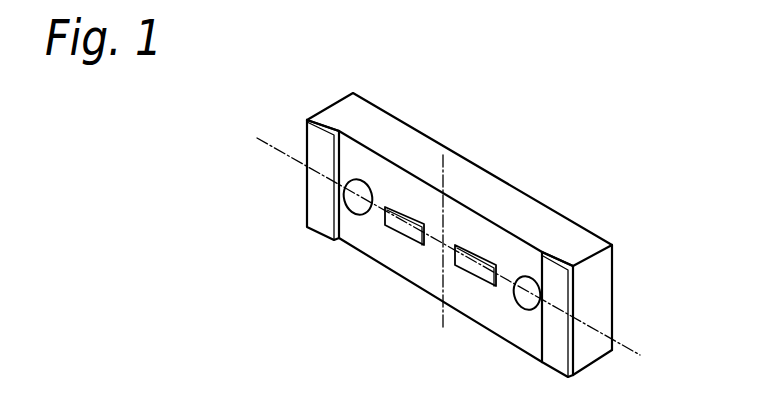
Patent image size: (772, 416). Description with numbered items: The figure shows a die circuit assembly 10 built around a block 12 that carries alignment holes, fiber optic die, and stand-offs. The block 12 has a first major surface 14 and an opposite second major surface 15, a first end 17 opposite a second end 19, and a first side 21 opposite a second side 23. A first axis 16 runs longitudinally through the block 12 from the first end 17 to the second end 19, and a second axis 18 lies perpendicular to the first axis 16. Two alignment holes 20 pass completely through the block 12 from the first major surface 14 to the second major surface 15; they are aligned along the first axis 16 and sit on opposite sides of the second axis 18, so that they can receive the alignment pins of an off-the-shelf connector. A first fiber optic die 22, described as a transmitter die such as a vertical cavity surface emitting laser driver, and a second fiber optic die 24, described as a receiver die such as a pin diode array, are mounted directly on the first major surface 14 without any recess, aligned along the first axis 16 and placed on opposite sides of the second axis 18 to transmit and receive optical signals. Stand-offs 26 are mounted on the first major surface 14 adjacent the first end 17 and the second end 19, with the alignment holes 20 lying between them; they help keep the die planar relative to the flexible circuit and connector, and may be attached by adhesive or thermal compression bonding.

The die circuit assembly 10 is at (560, 142).
The block 12 is at (380, 108).
The first major surface 14 is at (365, 237).
The second major surface 15 is at (585, 242).
The first axis 16 is at (622, 352).
The first end 17 is at (325, 108).
The second axis 18 is at (443, 318).
The second end 19 is at (597, 287).
The alignment holes 20 is at (525, 277).
The first side 21 is at (523, 312).
The first fiber optic die 22 is at (400, 238).
The second side 23 is at (408, 153).
The second fiber optic die 24 is at (473, 290).
The stand-offs 26 is at (314, 230).